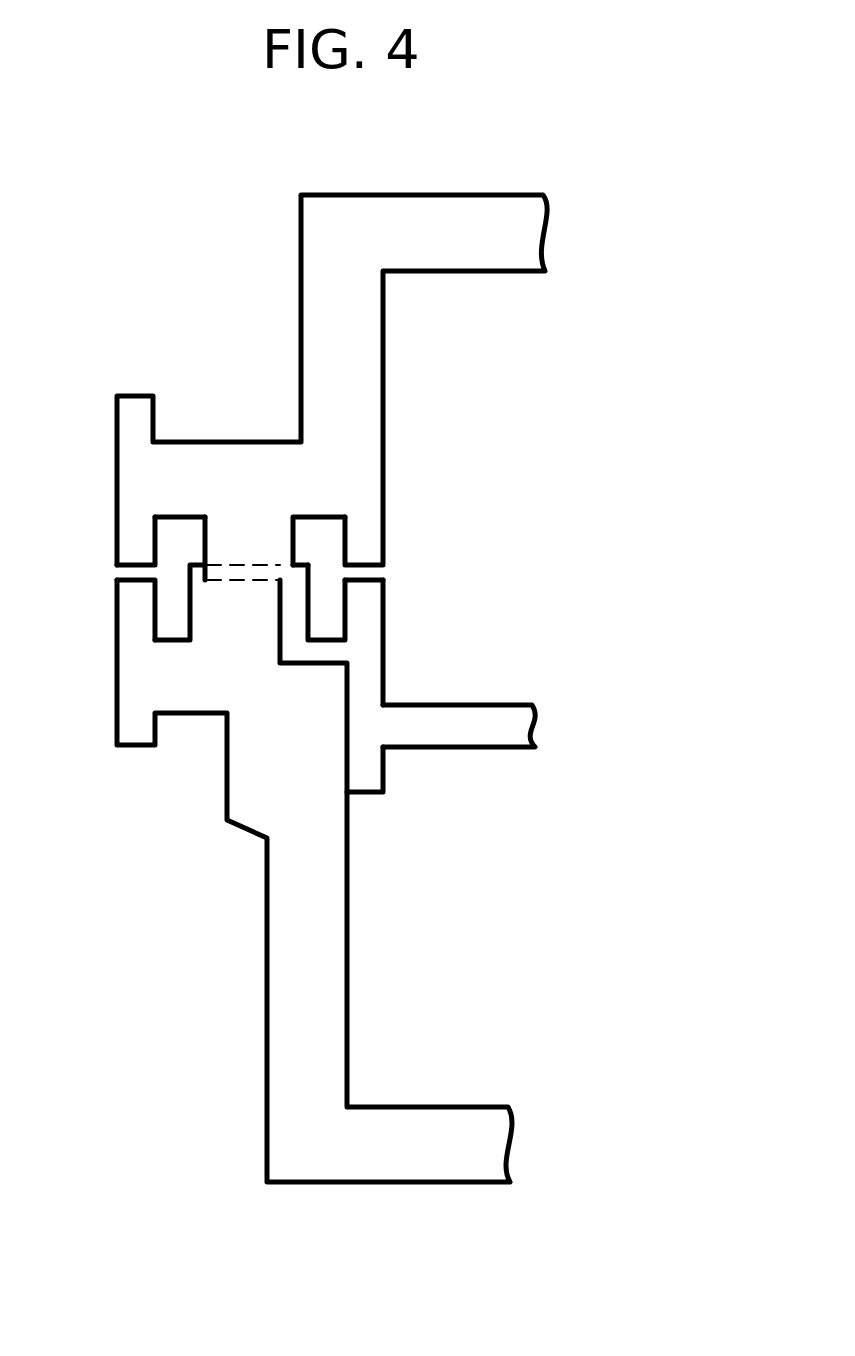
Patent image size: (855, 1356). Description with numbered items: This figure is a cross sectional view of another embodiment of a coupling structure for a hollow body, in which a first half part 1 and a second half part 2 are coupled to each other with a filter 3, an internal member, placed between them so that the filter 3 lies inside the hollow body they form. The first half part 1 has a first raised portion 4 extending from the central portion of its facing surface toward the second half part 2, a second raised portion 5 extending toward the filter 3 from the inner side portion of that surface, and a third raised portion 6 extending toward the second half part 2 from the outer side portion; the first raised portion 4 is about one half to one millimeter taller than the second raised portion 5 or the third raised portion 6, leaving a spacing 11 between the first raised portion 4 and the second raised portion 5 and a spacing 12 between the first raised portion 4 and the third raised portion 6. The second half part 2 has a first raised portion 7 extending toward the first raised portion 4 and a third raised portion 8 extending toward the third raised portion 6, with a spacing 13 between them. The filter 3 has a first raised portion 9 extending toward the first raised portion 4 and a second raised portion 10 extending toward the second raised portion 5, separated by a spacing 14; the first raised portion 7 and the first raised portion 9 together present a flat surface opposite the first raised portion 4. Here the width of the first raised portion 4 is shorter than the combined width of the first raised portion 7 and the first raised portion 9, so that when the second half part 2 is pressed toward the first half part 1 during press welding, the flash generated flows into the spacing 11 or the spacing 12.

The first half part 1 is at (296, 291).
The second half part 2 is at (260, 878).
The filter 3 is at (449, 749).
The first raised portion 4 is at (276, 527).
The second raised portion 5 is at (372, 559).
The third raised portion 6 is at (150, 560).
The first raised portion 7 is at (218, 612).
The third raised portion 8 is at (128, 578).
The first raised portion 9 is at (296, 622).
The second raised portion 10 is at (370, 578).
The spacing 11 is at (340, 528).
The spacing 12 is at (162, 527).
The spacing 13 is at (168, 638).
The spacing 14 is at (330, 637).